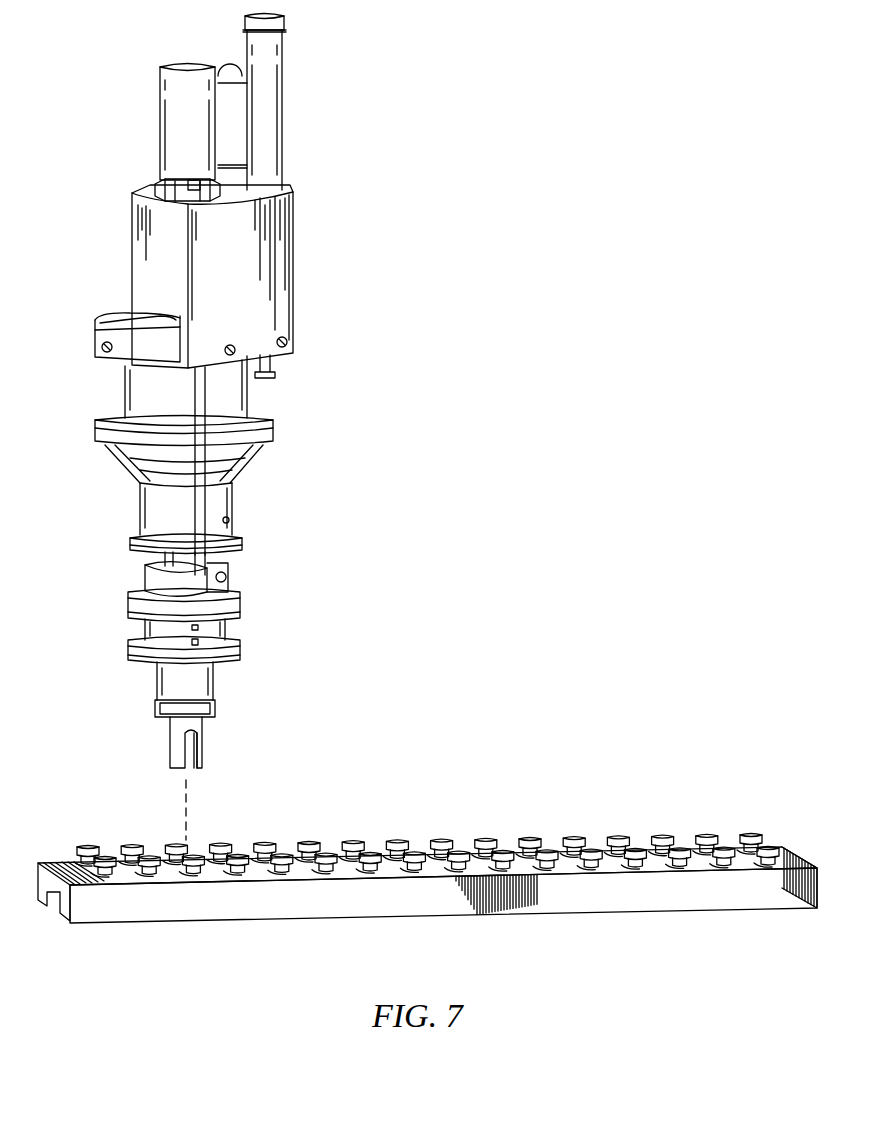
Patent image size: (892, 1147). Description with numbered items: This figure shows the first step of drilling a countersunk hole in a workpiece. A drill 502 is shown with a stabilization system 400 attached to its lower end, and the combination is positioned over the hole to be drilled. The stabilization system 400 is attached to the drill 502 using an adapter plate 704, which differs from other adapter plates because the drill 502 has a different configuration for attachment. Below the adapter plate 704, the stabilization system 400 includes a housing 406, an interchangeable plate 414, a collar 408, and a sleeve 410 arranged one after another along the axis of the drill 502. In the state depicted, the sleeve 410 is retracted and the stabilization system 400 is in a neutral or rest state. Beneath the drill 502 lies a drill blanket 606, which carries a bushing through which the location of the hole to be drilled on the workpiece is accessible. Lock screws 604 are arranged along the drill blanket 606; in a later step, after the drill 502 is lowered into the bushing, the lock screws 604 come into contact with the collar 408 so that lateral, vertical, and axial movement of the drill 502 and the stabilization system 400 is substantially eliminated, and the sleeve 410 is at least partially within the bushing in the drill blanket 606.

The drill 502 is at (63, 62).
The stabilization system 400 is at (272, 557).
The adapter plate 704 is at (145, 575).
The housing 406 is at (128, 603).
The interchangeable plate 414 is at (157, 676).
The collar 408 is at (155, 712).
The sleeve 410 is at (170, 750).
The lock screws 604 is at (308, 845).
The drill blanket 606 is at (330, 907).